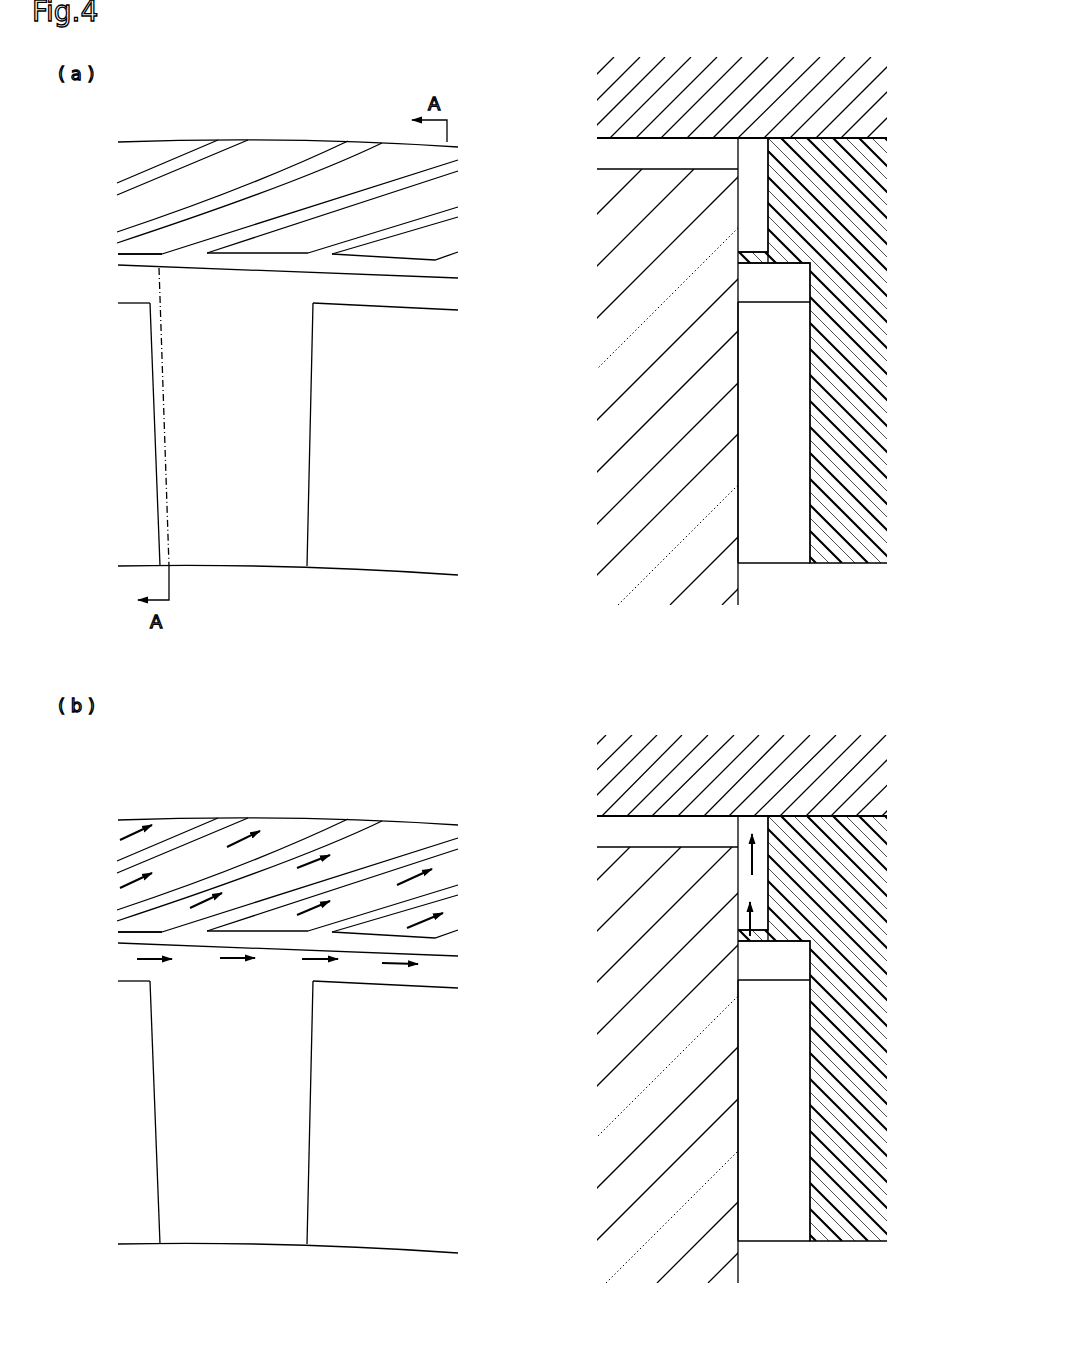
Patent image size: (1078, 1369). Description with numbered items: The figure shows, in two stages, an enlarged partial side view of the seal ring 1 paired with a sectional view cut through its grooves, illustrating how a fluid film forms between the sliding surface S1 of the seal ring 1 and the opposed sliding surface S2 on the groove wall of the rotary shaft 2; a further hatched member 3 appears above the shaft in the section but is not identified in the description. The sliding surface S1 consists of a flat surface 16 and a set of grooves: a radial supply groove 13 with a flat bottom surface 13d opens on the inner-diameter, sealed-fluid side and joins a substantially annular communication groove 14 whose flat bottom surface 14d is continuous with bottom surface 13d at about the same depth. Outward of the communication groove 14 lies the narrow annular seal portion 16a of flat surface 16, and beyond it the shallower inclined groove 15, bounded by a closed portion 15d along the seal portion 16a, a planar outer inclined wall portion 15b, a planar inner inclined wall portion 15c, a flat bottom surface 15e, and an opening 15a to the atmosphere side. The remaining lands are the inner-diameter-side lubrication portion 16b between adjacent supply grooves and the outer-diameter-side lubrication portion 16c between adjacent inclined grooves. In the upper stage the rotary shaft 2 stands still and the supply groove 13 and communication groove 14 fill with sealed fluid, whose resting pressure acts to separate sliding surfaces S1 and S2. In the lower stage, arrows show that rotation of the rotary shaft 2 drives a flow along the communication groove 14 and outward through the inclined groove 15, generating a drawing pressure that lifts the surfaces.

The seal ring 1 is at (168, 128).
The rotary shaft 2 is at (584, 374).
The cylinder head 3 is at (584, 104).
The supply groove 13 is at (293, 520).
The bottom surface 13d is at (233, 510).
The communication groove 14 is at (356, 297).
The bottom surface 14d is at (445, 294).
The inclined groove 15 is at (210, 218).
The opening 15a is at (425, 148).
The outer inclined wall portion 15b is at (290, 174).
The inner inclined wall portion 15c is at (275, 216).
The closed portion 15d is at (147, 254).
The bottom surface 15e is at (258, 205).
The flat surface 16 is at (392, 515).
The seal portion 16a is at (200, 265).
The inner-diameter-side lubrication portion 16b is at (288, 909).
The outer-diameter-side lubrication portion 16c is at (393, 185).
The sliding surface S1 is at (740, 190).
The sliding surface S2 is at (738, 485).